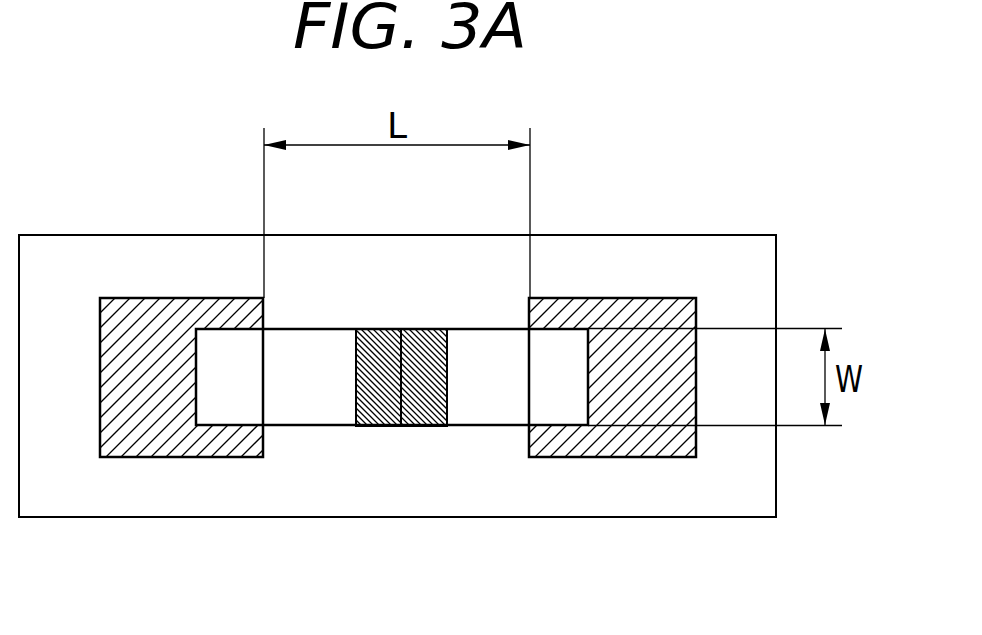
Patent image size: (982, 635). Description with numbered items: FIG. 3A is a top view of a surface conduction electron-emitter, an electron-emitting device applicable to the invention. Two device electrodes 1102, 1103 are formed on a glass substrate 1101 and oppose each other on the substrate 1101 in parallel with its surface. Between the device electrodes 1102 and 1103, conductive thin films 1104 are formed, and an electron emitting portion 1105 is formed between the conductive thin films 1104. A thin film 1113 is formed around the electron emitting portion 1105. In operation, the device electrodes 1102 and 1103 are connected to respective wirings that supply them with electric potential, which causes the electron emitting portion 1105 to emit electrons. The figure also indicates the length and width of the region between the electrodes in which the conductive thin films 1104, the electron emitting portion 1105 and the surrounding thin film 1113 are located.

The glass substrate 1101 is at (708, 248).
The device electrode 1102 is at (617, 307).
The device electrode 1103 is at (150, 307).
The conductive thin films 1104 is at (308, 412).
The electron emitting portion 1105 is at (405, 427).
The thin film 1113 is at (380, 347).